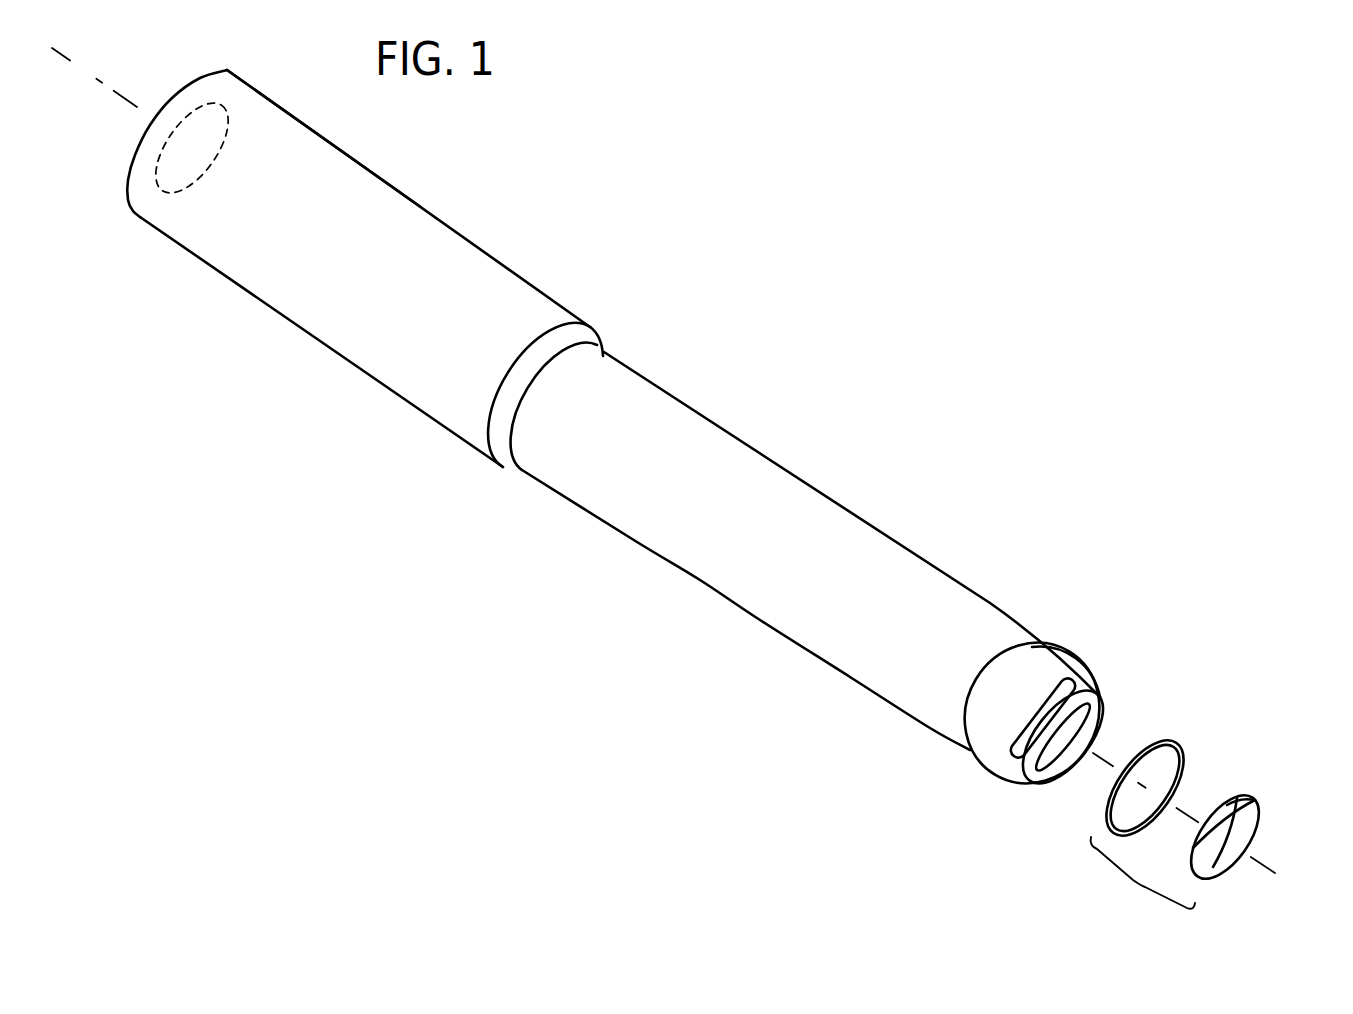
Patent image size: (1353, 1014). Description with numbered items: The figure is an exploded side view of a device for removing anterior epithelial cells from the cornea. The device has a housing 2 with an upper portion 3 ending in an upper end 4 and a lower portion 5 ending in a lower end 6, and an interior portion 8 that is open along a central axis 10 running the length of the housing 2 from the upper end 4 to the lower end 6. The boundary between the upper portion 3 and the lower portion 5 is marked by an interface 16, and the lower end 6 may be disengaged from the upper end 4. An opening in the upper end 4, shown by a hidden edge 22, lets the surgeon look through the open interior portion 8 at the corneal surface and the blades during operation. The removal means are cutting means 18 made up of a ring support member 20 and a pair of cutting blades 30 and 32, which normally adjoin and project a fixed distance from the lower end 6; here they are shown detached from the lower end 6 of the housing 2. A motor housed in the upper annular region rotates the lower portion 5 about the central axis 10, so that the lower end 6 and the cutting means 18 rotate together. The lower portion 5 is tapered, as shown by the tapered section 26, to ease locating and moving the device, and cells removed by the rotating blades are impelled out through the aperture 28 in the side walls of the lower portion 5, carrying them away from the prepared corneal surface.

The central axis 10 is at (663, 455).
The housing 2 is at (520, 274).
The upper portion 3 is at (315, 158).
The upper end 4 is at (196, 81).
The hidden edge 22 is at (232, 108).
The interface 16 is at (522, 470).
The lower portion 5 is at (845, 520).
The tapered section 26 is at (1050, 657).
The lower end 6 is at (1095, 695).
The interior portion 8 is at (1063, 718).
The aperture 28 is at (1015, 748).
The ring support member 20 is at (1180, 750).
The cutting blade 30 is at (1260, 815).
The cutting blade 32 is at (1257, 800).
The cutting means 18 is at (1143, 875).